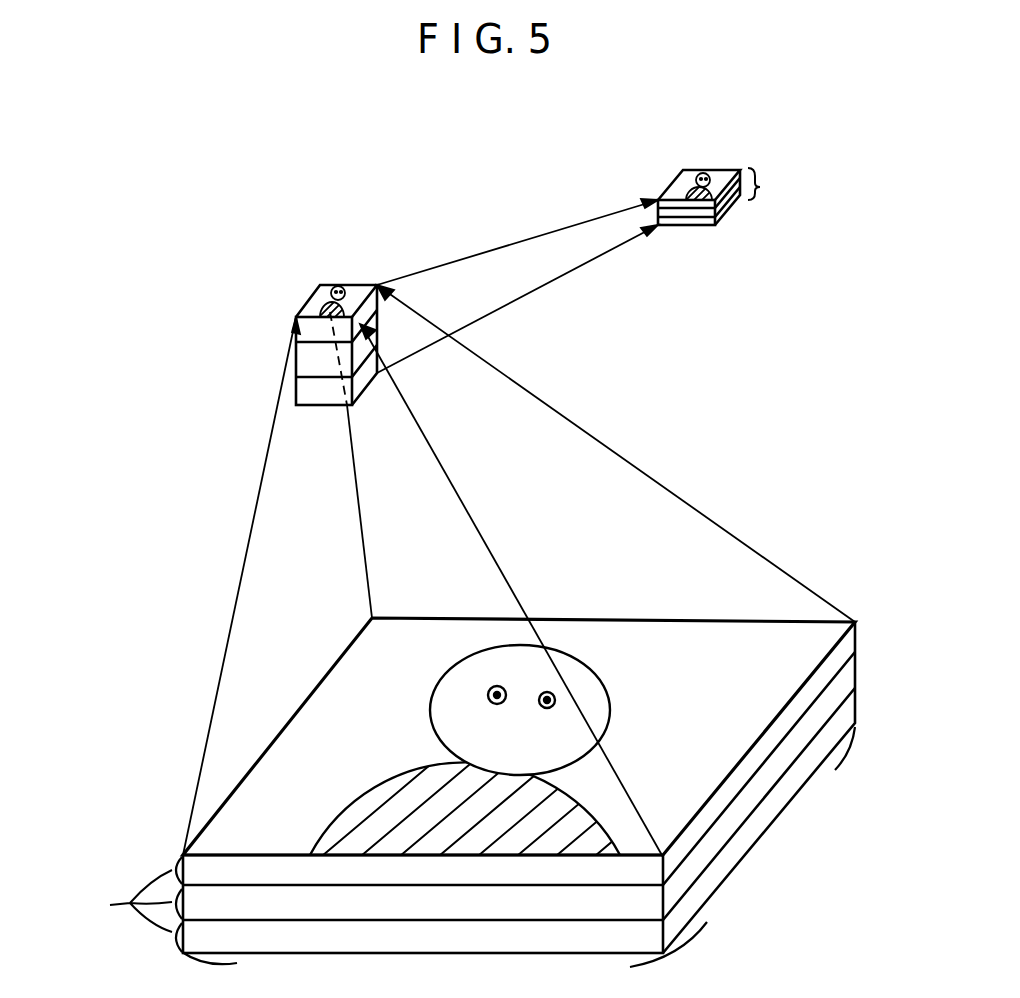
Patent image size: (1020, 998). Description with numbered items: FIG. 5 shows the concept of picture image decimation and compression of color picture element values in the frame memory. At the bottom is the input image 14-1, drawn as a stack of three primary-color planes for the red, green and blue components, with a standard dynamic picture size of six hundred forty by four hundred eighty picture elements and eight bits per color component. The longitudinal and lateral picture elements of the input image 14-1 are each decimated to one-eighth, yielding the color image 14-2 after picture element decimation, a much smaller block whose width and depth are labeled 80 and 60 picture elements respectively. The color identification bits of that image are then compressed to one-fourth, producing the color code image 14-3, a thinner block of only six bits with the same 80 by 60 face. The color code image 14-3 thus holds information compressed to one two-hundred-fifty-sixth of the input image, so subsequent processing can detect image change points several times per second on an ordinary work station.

The input image P 14-1 is at (632, 617).
The color image Q after picture element decimation 14-2 is at (312, 301).
The color code image F after compression of color identification bits 14-3 is at (670, 177).
The block depth of 60 picture elements 60 is at (352, 405).
The block width of 80 picture elements 80 is at (296, 405).